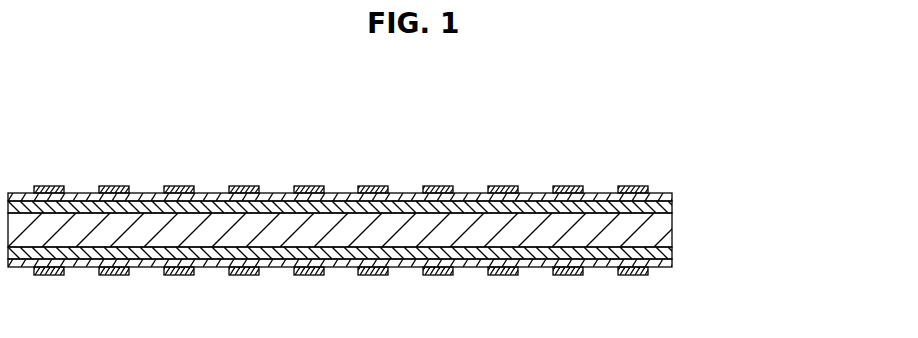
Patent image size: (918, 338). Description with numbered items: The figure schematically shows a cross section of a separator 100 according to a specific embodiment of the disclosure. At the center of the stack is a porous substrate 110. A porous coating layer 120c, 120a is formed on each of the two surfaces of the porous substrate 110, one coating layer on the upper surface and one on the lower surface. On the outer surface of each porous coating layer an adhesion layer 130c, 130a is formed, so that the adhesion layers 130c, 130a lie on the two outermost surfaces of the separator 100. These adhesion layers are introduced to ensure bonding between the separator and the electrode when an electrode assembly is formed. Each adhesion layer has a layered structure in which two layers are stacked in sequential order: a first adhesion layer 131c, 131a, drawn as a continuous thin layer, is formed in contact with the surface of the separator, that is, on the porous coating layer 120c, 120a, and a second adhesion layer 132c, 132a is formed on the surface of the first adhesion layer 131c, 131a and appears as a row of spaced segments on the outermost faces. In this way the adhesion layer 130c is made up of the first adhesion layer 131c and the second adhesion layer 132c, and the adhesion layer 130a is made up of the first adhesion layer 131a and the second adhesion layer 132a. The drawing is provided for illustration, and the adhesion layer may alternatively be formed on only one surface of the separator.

The separator 100 is at (85, 128).
The porous substrate 110 is at (665, 229).
The porous coating layer 120c is at (666, 209).
The porous coating layer 120a is at (668, 251).
The first adhesion layer 131c is at (671, 196).
The first adhesion layer 131a is at (668, 265).
The second adhesion layer 132c is at (632, 186).
The second adhesion layer 132a is at (632, 277).
The adhesion layer 130c is at (411, 173).
The adhesion layer 130a is at (411, 288).